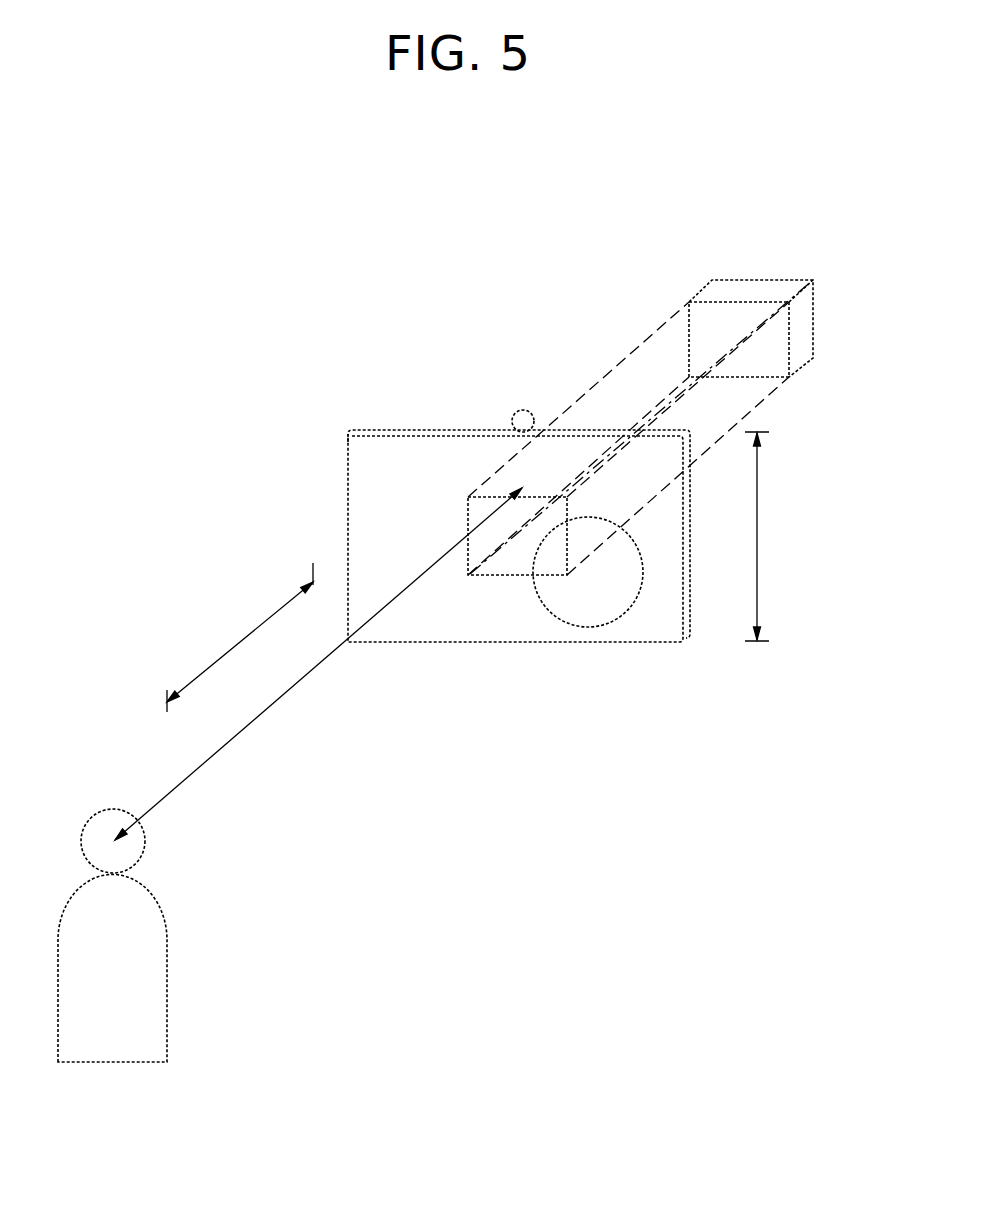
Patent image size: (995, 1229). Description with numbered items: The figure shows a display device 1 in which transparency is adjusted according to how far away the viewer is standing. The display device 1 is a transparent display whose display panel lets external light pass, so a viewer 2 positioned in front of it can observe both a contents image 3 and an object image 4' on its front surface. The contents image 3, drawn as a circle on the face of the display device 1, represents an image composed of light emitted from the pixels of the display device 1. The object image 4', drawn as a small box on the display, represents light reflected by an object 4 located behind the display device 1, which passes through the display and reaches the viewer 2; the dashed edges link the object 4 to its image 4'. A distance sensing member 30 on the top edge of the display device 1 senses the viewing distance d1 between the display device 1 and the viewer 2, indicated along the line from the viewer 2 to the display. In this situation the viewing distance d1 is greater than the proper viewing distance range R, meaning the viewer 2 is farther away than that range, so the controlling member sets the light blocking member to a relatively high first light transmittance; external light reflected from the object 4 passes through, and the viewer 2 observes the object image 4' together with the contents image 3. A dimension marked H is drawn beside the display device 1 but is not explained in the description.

The display device 1 is at (330, 453).
The viewer 2 is at (158, 988).
The contents image 3 is at (588, 628).
The object 4 is at (777, 328).
The object image 4' is at (527, 427).
The distance sensing member 30 is at (524, 410).
The viewing distance d1 is at (318, 664).
The proper viewing distance range R is at (240, 637).
The height H is at (766, 536).